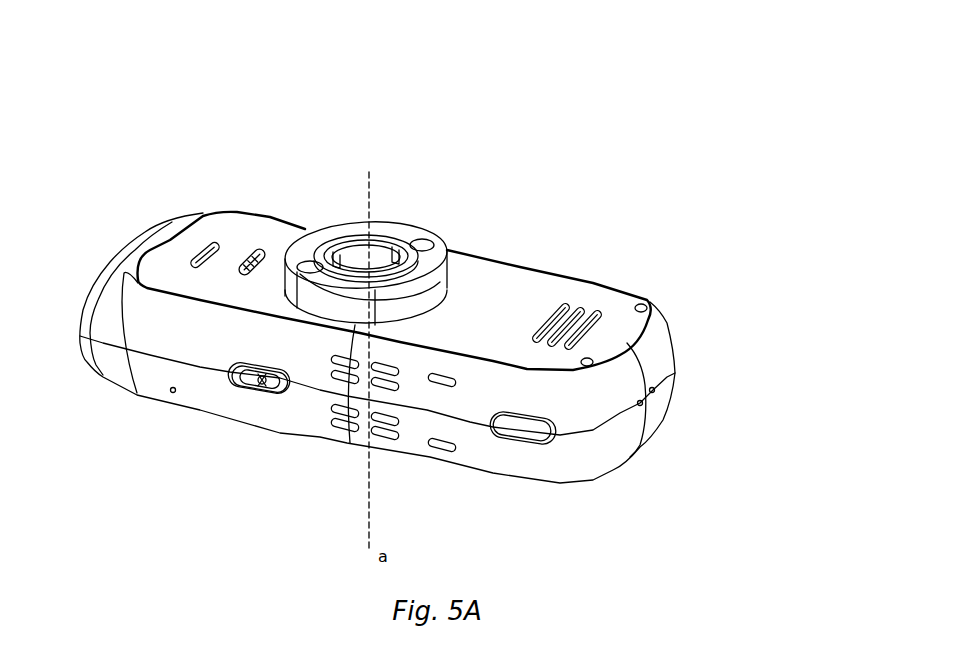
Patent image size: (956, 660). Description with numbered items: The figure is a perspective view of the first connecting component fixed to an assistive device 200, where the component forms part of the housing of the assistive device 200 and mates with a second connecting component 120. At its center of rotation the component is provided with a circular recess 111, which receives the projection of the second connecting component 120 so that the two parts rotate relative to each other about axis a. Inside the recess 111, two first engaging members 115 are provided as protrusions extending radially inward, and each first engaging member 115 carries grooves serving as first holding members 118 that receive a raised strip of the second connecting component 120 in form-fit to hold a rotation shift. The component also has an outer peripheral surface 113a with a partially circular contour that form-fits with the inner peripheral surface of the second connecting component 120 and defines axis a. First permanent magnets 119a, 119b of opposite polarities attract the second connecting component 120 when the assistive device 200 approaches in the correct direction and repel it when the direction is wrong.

The assistive device 200 is at (435, 298).
The second connecting component 120 is at (407, 224).
The first holding member 118 is at (452, 260).
The first engaging member 115 is at (394, 250).
The recess 111 is at (357, 243).
The outer peripheral surface 113a is at (397, 302).
The first permanent magnet 119a is at (306, 264).
The first permanent magnet 119b is at (413, 246).